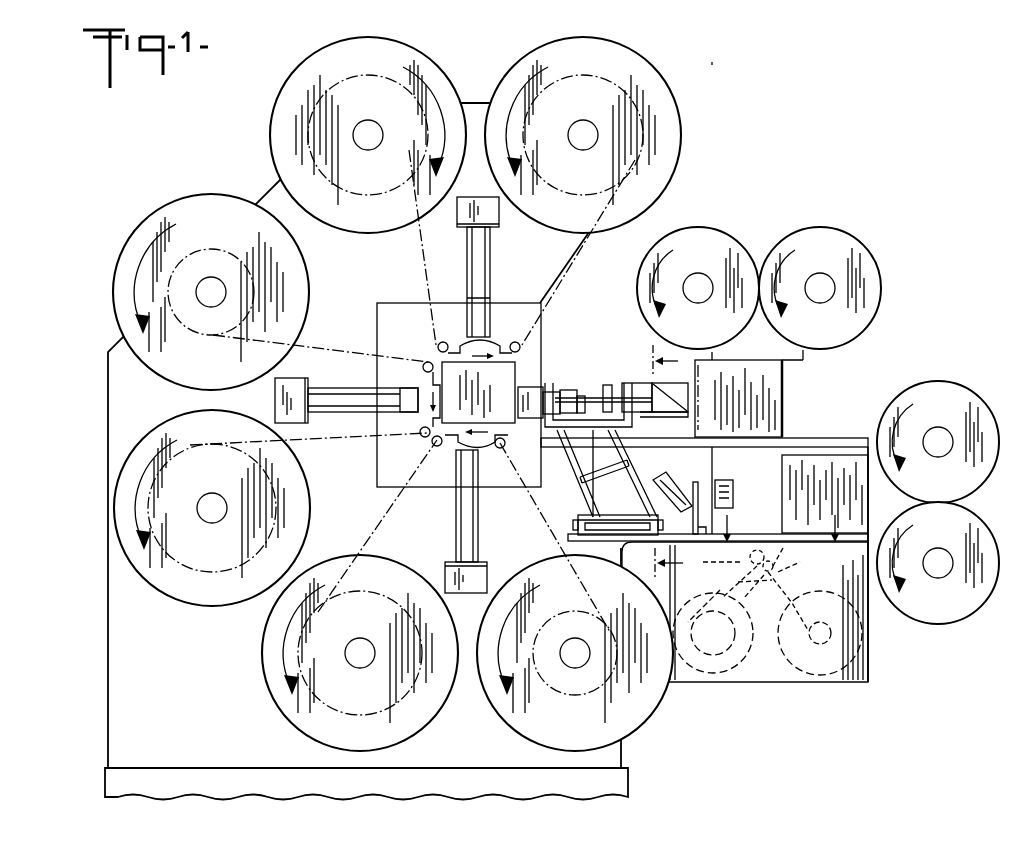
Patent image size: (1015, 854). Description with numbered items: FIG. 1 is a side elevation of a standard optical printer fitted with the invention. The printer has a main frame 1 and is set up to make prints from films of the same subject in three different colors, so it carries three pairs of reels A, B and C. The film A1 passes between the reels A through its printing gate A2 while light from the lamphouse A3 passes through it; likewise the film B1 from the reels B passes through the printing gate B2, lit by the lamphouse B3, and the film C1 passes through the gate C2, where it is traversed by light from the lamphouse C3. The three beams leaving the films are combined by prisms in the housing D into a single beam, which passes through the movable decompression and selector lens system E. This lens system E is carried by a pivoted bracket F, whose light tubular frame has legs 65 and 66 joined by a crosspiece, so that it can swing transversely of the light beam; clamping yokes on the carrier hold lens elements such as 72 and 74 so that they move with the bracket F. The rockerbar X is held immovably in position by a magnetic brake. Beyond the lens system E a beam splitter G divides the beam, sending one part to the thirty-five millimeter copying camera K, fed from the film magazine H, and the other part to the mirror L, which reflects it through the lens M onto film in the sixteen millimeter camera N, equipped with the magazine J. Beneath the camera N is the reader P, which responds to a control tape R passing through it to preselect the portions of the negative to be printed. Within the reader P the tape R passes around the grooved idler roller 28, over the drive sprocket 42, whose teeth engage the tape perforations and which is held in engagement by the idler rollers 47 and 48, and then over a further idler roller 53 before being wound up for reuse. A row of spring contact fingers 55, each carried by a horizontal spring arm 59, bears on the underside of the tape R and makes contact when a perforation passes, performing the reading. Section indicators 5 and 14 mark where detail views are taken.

The main frame 1 is at (100, 552).
The reels A is at (441, 68).
The film A1 is at (425, 261).
The printing gate A2 is at (504, 341).
The lamphouse A3 is at (499, 212).
The reels B is at (148, 370).
The film B1 is at (343, 352).
The printing gate B2 is at (420, 387).
The lamphouse B3 is at (295, 378).
The reels C is at (438, 712).
The film C1 is at (539, 500).
The gate C2 is at (505, 443).
The lamphouse C3 is at (452, 565).
The housing D is at (503, 378).
The selector lens system E is at (584, 348).
The pivoted bracket F is at (655, 500).
The beam splitter G is at (684, 393).
The film magazine H is at (818, 365).
The film magazine J is at (874, 422).
The copying camera K is at (772, 404).
The mirror L is at (677, 495).
The lens M is at (729, 499).
The camera N is at (808, 494).
The reader P is at (880, 657).
The tape R is at (722, 584).
The rockerbar X is at (604, 480).
The section line 5 is at (788, 527).
The section line 14 is at (653, 462).
The idler roller 28 is at (800, 562).
The drive sprocket 42 is at (747, 585).
The idler roller 47 is at (785, 548).
The idler roller 48 is at (750, 560).
The idler roller 53 is at (712, 560).
The spring contact fingers 55 is at (820, 633).
The spring arm 59 is at (776, 601).
The leg 65 is at (578, 470).
The leg 66 is at (608, 475).
The lens element 72 is at (638, 416).
The lens element 74 is at (545, 418).